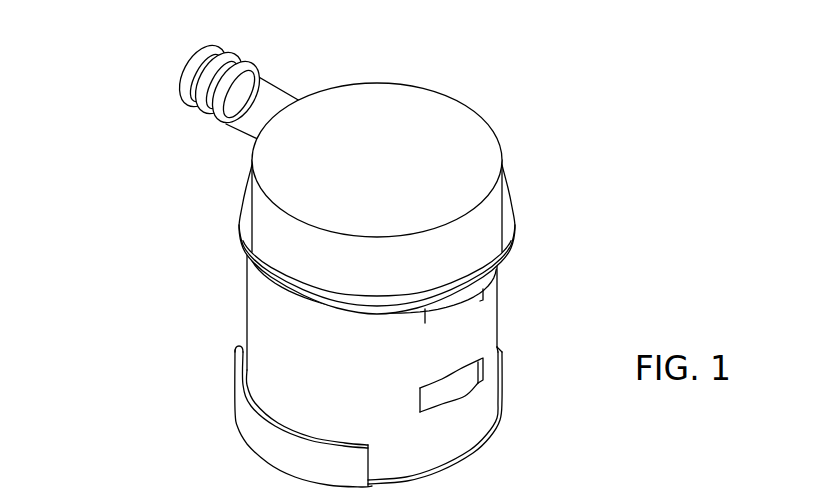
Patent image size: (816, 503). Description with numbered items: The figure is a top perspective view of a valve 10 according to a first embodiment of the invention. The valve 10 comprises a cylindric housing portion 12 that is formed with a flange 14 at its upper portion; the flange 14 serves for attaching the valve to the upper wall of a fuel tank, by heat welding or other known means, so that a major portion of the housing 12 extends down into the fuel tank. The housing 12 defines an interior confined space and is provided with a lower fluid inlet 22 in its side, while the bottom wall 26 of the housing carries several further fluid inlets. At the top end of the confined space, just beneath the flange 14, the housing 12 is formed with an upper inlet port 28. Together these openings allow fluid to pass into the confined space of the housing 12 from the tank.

The valve 10 is at (323, 268).
The cylindric housing portion 12 is at (428, 349).
The flange 14 is at (324, 239).
The lower fluid inlet 22 is at (455, 388).
The bottom wall 26 is at (450, 472).
The upper inlet port 28 is at (431, 317).